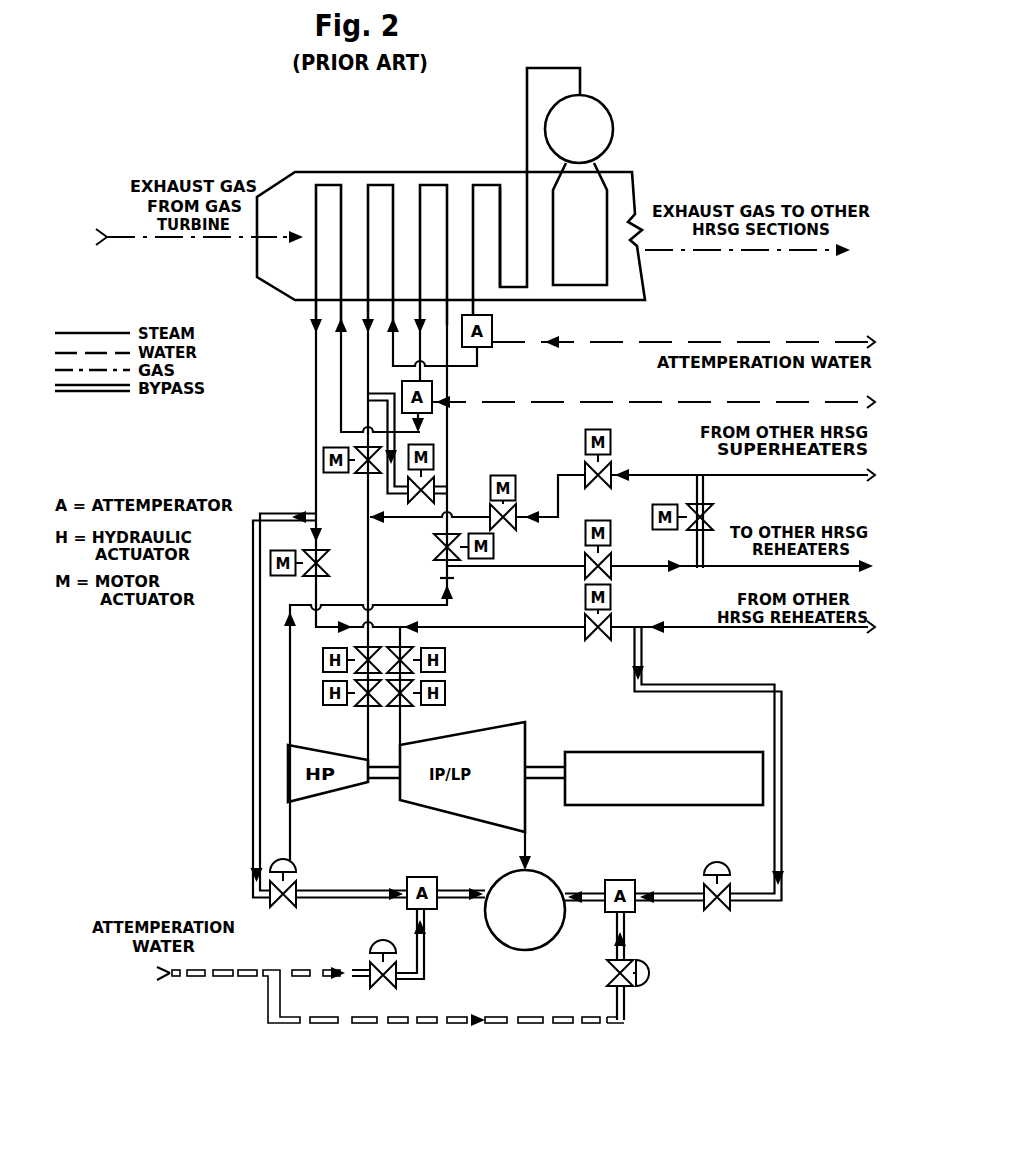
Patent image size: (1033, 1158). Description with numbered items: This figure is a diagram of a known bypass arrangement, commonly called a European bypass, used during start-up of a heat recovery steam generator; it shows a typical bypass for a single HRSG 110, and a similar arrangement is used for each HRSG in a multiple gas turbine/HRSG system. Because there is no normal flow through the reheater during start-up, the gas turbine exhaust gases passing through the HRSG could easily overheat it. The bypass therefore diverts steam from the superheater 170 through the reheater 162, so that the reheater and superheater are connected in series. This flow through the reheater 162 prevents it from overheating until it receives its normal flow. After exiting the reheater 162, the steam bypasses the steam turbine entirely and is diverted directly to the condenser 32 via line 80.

The HRSG 110 is at (278, 169).
The reheater 162 is at (329, 178).
The superheater 170 is at (381, 178).
The line 80 is at (258, 848).
The condenser 32 is at (552, 880).